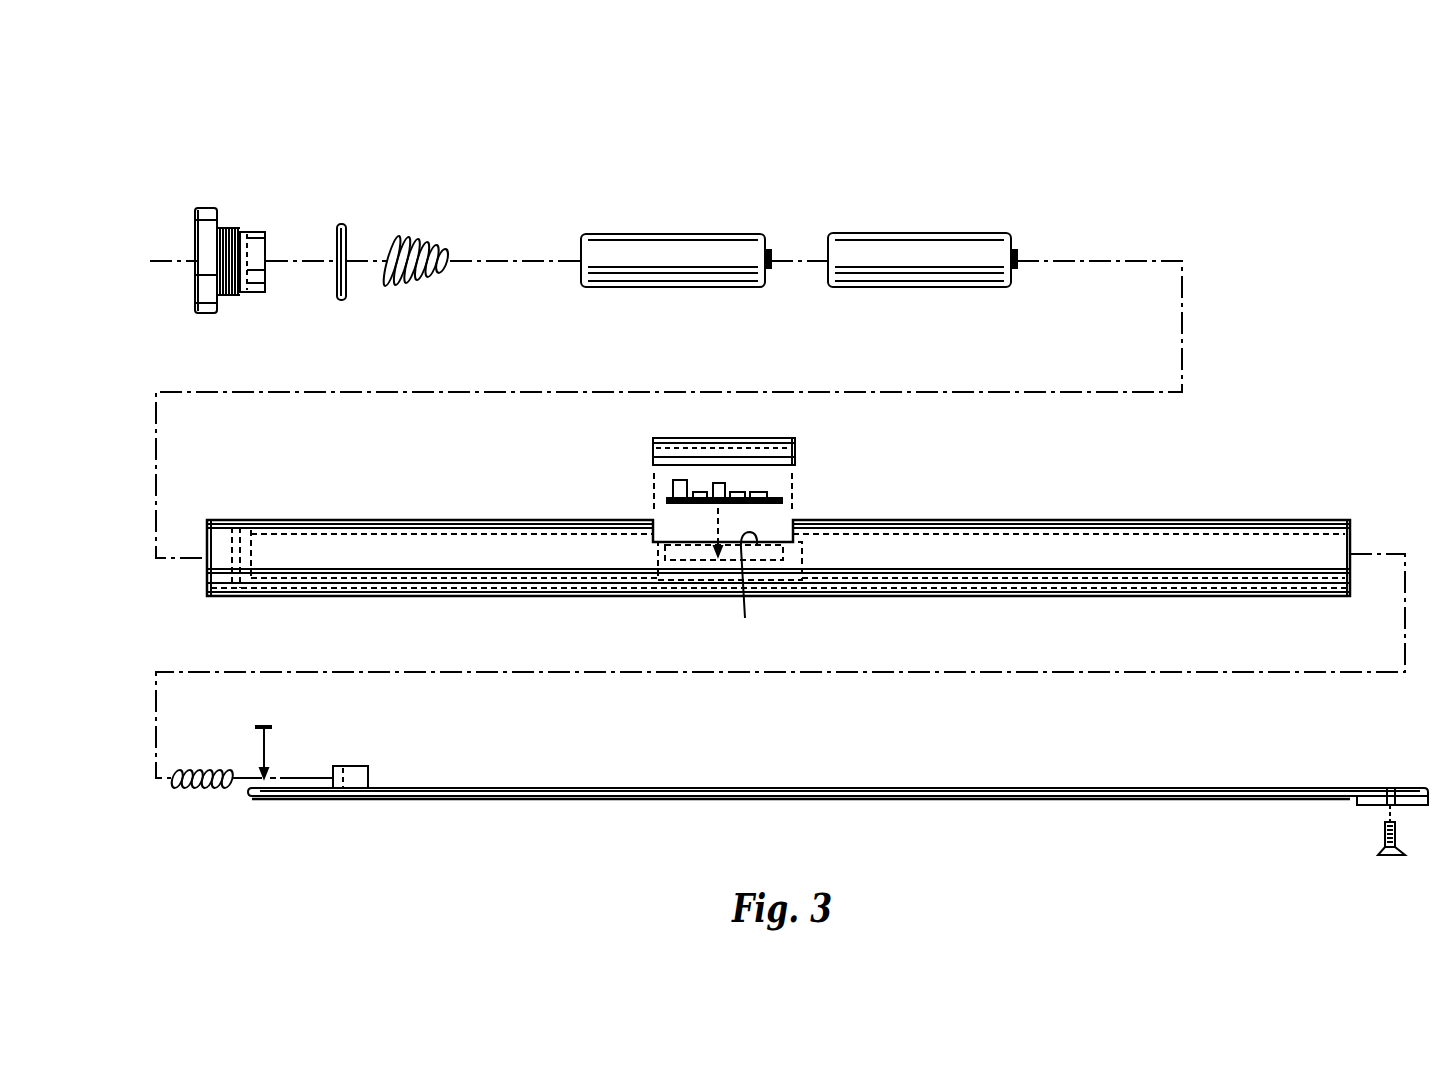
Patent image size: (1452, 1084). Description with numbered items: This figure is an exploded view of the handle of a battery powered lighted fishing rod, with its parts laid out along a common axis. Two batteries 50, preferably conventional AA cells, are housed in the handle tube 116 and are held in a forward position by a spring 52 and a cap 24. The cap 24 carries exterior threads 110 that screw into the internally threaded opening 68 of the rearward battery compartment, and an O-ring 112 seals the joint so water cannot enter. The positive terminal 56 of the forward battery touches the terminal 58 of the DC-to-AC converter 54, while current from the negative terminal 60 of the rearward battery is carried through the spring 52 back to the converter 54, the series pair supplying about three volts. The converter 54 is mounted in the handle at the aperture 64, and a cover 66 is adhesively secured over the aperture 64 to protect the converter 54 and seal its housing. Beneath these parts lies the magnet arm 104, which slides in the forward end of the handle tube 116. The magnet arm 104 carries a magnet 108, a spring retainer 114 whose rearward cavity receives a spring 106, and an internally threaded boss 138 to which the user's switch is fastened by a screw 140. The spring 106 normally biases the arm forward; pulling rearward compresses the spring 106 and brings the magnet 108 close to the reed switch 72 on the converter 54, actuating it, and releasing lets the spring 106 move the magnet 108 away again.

The cap 24 is at (197, 310).
The batteries 50 is at (673, 243).
The spring 52 is at (415, 240).
The DC-to-AC converter 54 is at (800, 495).
The positive terminal 56 is at (1013, 252).
The terminal 58 is at (673, 485).
The negative terminal 60 is at (581, 262).
The aperture 64 is at (749, 593).
The cover 66 is at (792, 438).
The internally threaded opening 68 is at (207, 578).
The reed switch 72 is at (760, 492).
The magnet arm 104 is at (880, 797).
The spring 106 is at (190, 787).
The magnet 108 is at (270, 724).
The exterior threads 110 is at (230, 222).
The O-ring 112 is at (344, 230).
The spring retainer 114 is at (368, 767).
The handle tube 116 is at (1233, 518).
The internally threaded boss 138 is at (1428, 797).
The screw 140 is at (1385, 857).